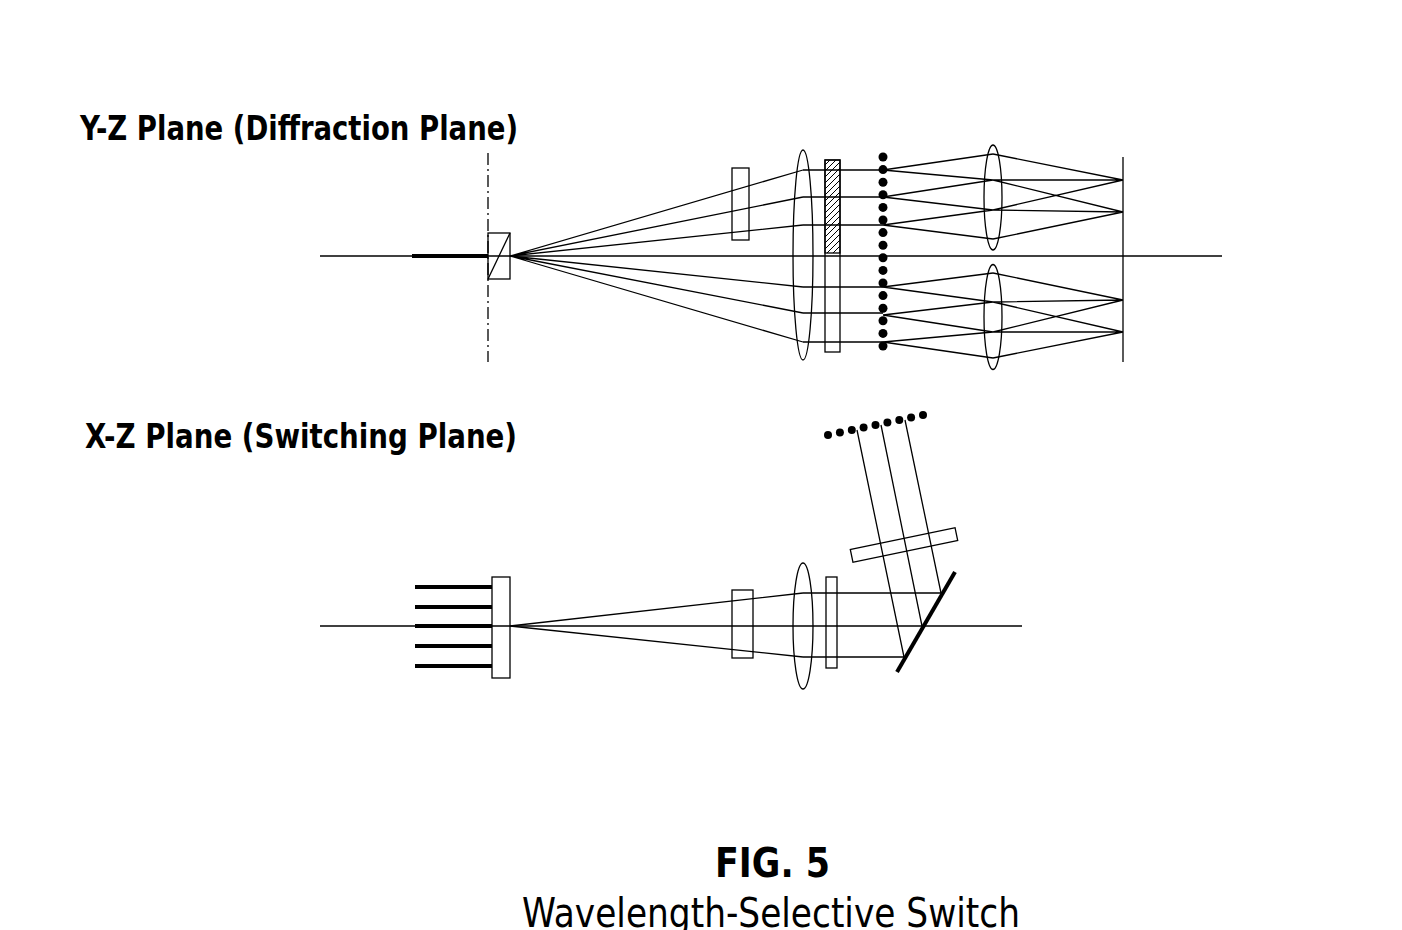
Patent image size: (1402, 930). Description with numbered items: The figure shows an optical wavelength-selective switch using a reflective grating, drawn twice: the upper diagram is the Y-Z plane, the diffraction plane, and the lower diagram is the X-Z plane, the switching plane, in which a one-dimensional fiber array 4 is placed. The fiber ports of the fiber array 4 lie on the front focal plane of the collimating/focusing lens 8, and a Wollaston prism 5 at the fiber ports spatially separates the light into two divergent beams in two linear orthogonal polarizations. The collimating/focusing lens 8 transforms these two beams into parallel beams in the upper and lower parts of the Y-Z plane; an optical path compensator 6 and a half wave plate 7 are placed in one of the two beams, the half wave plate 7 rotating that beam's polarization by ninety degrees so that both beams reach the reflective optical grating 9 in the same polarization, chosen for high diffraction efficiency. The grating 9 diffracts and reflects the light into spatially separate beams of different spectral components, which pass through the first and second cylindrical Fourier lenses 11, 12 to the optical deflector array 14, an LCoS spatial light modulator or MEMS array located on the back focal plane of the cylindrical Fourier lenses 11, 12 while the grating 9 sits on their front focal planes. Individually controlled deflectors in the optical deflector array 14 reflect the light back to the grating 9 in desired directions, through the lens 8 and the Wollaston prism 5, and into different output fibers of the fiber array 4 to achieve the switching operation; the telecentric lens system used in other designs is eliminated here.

The fiber array 4 is at (384, 494).
The Wollaston prism 5 is at (544, 485).
The optical path compensator 6 is at (666, 383).
The half wave plate 7 is at (832, 410).
The collimating/focusing lens 8 is at (740, 451).
The reflective optical grating 9 is at (964, 393).
The first cylindrical Fourier lens 11 is at (1064, 289).
The second cylindrical Fourier lens 12 is at (1081, 417).
The optical deflector array 14 is at (1106, 305).